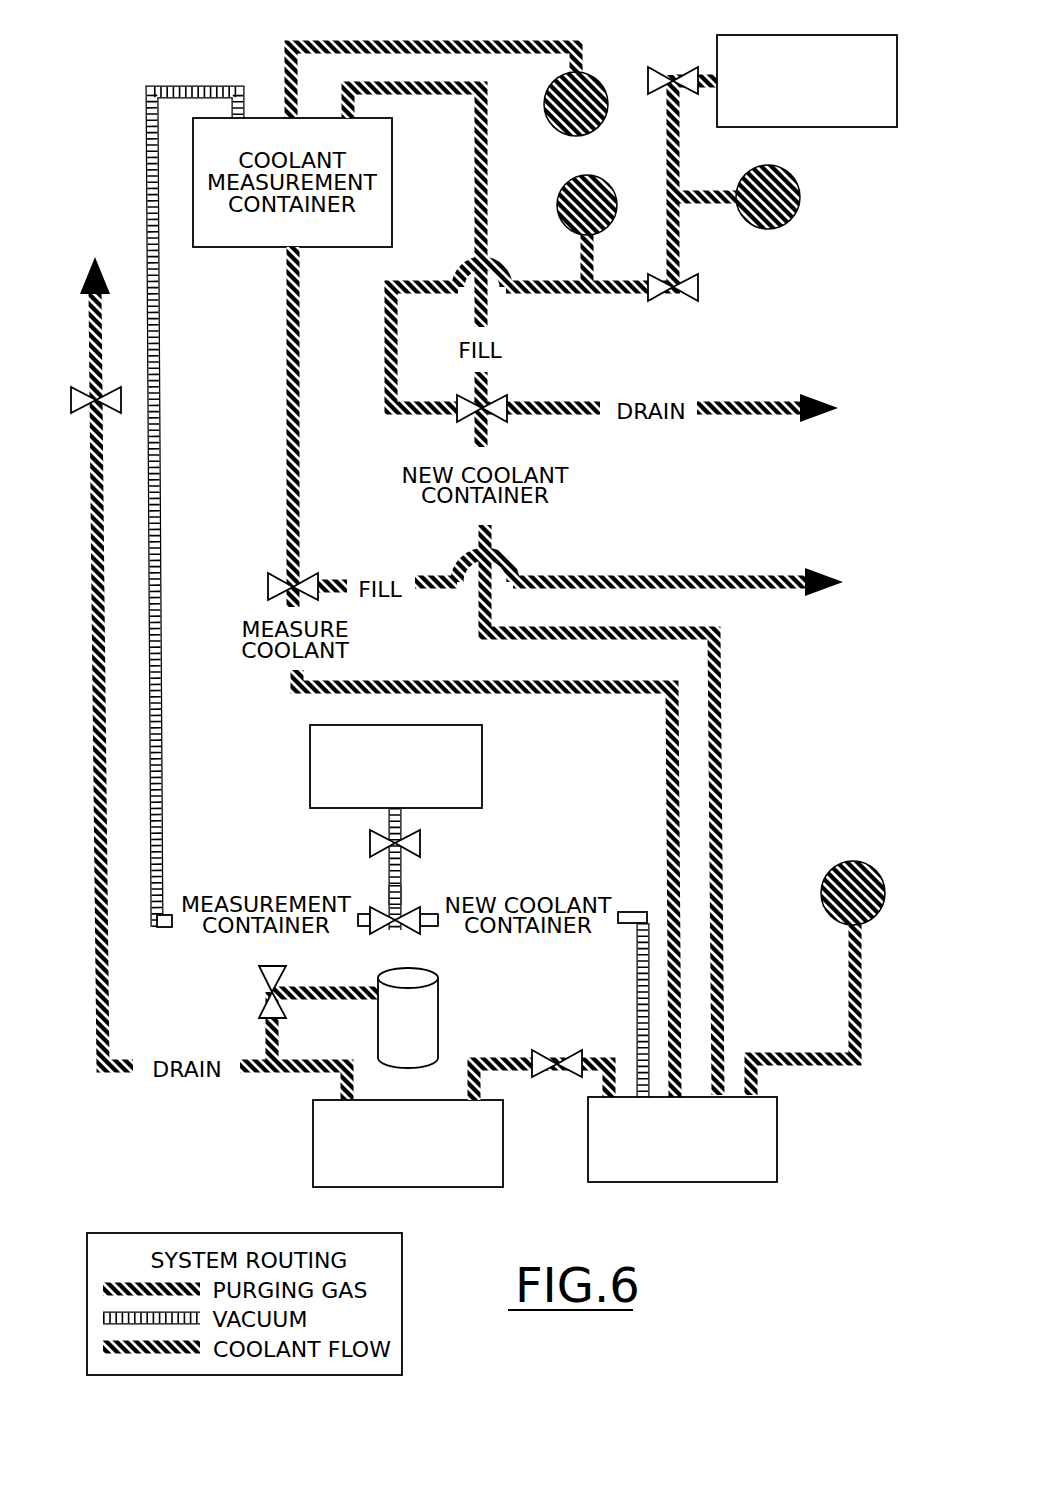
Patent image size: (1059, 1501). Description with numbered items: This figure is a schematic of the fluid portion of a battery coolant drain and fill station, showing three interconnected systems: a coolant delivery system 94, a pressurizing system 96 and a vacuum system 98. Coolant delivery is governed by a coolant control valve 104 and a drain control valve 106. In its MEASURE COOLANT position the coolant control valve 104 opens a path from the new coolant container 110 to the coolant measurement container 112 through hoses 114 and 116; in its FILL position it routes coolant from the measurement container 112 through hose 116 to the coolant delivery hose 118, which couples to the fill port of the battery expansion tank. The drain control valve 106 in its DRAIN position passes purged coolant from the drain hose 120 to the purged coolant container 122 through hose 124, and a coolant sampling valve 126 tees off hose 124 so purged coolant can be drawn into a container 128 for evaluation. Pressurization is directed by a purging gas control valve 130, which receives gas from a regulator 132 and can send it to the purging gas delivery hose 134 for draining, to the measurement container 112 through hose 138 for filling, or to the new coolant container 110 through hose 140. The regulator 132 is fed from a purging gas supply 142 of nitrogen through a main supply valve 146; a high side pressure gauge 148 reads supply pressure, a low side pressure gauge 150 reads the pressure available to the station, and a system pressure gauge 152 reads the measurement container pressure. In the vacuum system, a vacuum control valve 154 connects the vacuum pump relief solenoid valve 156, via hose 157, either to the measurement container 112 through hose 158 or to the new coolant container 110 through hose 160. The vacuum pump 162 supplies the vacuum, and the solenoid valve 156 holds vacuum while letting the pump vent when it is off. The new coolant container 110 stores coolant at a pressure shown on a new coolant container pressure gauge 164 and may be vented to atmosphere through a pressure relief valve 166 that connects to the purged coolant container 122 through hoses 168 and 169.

The coolant delivery system 94 is at (432, 598).
The pressurizing system 96 is at (597, 303).
The vacuum system 98 is at (418, 890).
The coolant control valve 104 is at (313, 573).
The drain control valve 106 is at (123, 390).
The new coolant container 110 is at (777, 1133).
The coolant measurement container 112 is at (393, 153).
The hose 114 is at (665, 767).
The hose 116 is at (300, 332).
The coolant delivery hose 118 is at (647, 575).
The drain hose 120 is at (102, 322).
The purged coolant container 122 is at (313, 1132).
The hose 124 is at (107, 823).
The coolant sampling valve 126 is at (257, 973).
The container 128 is at (437, 1002).
The purging gas control valve 130 is at (497, 398).
The regulator 132 is at (698, 280).
The purging gas delivery hose 134 is at (753, 398).
The hose 138 is at (488, 187).
The hose 140 is at (722, 702).
The purging gas supply 142 is at (822, 127).
The main supply valve 146 is at (663, 68).
The high side pressure gauge 148 is at (800, 196).
The low side pressure gauge 150 is at (618, 202).
The system pressure gauge 152 is at (595, 75).
The vacuum control valve 154 is at (377, 898).
The vacuum pump relief solenoid valve 156 is at (422, 842).
The hose 157 is at (403, 877).
The hose 158 is at (163, 768).
The hose 160 is at (636, 970).
The vacuum pump 162 is at (485, 757).
The new coolant container pressure gauge 164 is at (843, 862).
The pressure relief valve 166 is at (570, 1073).
The hose 168 is at (478, 1055).
The hose 169 is at (593, 1055).